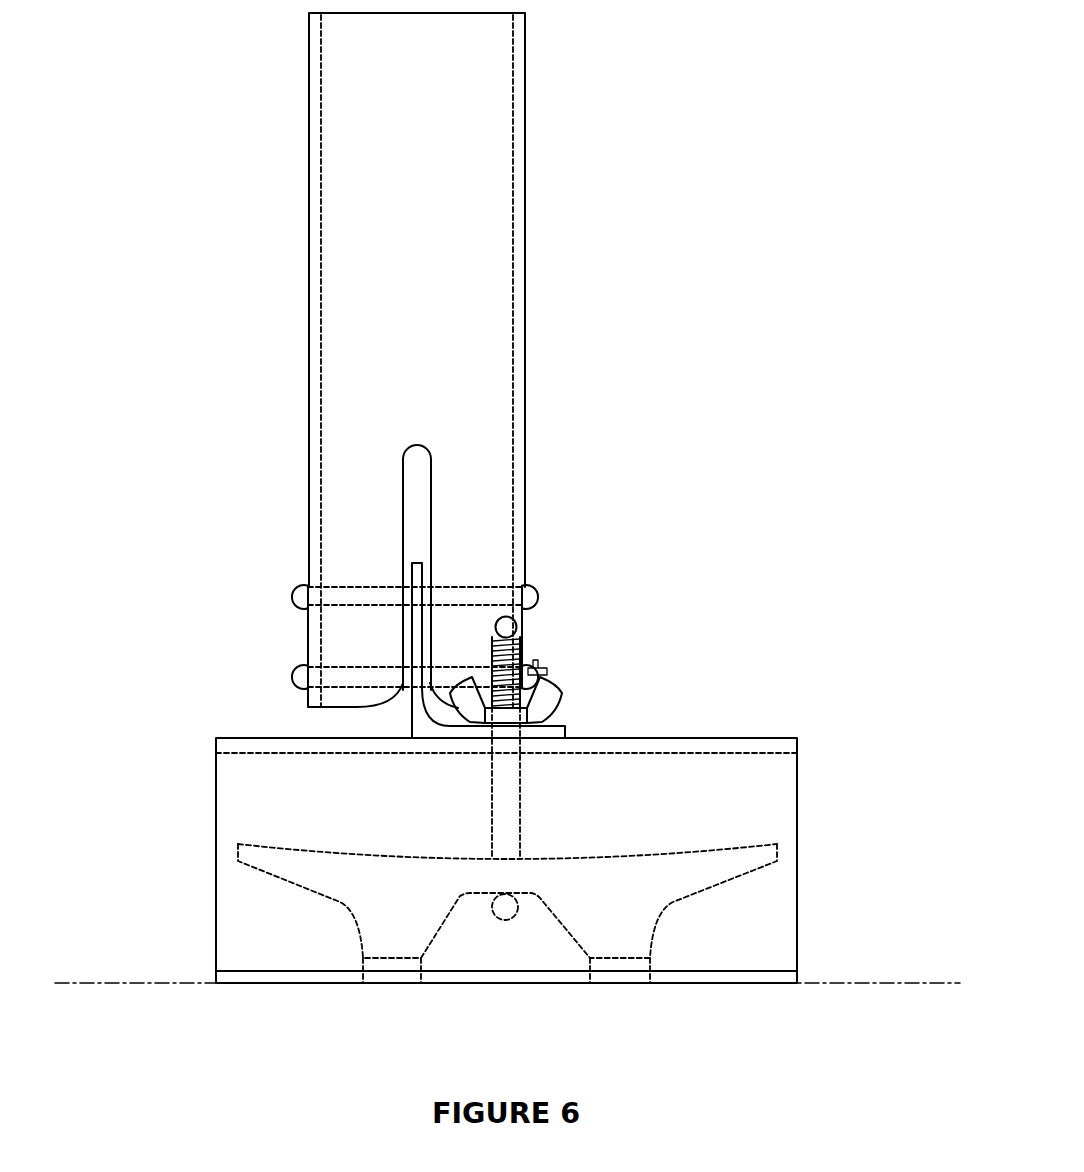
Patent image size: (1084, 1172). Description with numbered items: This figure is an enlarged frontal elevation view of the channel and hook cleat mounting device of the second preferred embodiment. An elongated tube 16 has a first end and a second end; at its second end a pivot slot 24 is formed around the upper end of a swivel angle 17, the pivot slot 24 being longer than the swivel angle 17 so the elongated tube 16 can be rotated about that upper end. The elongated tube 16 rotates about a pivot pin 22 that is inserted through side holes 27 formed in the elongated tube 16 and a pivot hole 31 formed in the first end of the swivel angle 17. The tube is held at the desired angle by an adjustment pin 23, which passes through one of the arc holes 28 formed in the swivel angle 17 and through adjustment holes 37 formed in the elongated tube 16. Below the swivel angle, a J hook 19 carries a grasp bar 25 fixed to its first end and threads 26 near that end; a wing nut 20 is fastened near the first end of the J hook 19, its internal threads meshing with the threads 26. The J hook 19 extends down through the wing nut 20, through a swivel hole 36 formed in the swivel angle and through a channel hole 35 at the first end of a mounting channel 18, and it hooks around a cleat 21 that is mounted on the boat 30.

The elongated tube 16 is at (524, 335).
The swivel angle 17 is at (403, 563).
The mounting channel 18 is at (690, 738).
The J hook 19 is at (520, 810).
The wing nut 20 is at (553, 683).
The cleat 21 is at (767, 847).
The pivot pin 22 is at (292, 592).
The adjustment pin 23 is at (292, 672).
The pivot slot 24 is at (431, 470).
The grasp bar 25 is at (518, 624).
The threads 26 is at (488, 652).
The side holes 27 is at (321, 577).
The arc holes 28 is at (405, 712).
The boat 30 is at (842, 983).
The pivot hole 31 is at (424, 566).
The channel hole 35 is at (487, 743).
The swivel hole 36 is at (490, 730).
The adjustment holes 37 is at (321, 657).